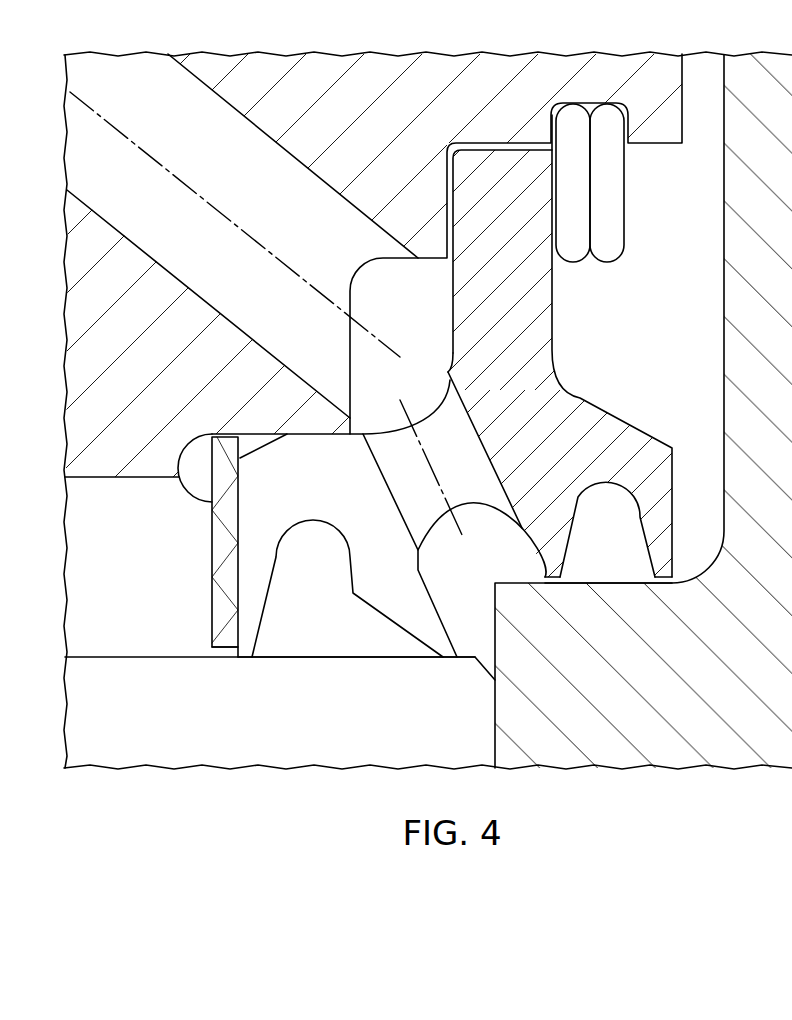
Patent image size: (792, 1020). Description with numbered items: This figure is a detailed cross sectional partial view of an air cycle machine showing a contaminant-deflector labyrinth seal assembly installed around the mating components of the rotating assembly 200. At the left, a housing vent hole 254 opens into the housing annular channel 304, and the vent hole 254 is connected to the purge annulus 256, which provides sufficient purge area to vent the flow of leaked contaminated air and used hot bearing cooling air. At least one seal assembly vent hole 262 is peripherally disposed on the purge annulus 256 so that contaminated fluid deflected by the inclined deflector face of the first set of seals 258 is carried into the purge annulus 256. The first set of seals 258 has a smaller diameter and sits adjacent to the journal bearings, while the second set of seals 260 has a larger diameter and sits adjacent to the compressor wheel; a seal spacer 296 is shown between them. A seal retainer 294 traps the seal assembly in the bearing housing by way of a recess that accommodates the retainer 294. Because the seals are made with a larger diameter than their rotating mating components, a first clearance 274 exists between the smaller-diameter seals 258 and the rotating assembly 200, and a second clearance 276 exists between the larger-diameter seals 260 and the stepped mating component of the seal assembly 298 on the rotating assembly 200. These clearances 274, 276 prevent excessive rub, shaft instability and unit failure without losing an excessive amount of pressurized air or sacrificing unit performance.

The rotating assembly 200 is at (216, 767).
The bearing housing vent hole 254 is at (246, 282).
The purge annulus 256 is at (503, 569).
The first set of seals 258 is at (312, 523).
The second set of seals 260 is at (548, 415).
The seal assembly vent hole 262 is at (437, 427).
The first clearance 274 is at (254, 659).
The second clearance 276 is at (548, 583).
The seal retainer 294 is at (633, 272).
The seal spacer 296 is at (213, 515).
The stepped mating component of the seal assembly 298 is at (599, 606).
The housing annular channel 304 is at (373, 352).